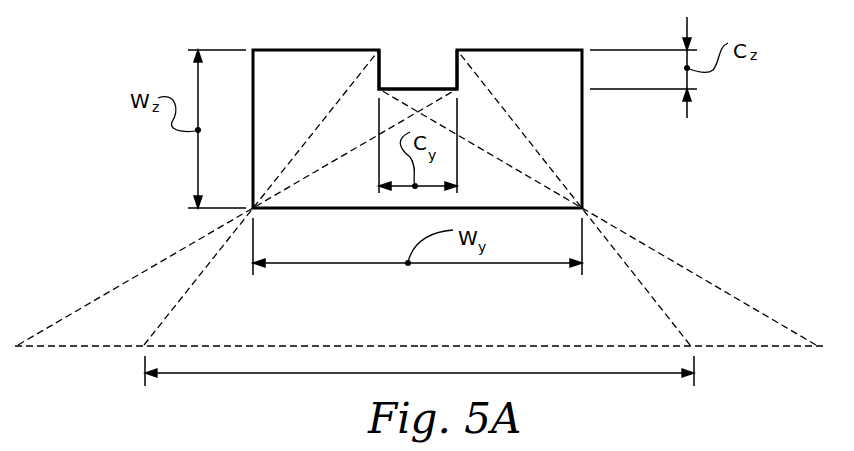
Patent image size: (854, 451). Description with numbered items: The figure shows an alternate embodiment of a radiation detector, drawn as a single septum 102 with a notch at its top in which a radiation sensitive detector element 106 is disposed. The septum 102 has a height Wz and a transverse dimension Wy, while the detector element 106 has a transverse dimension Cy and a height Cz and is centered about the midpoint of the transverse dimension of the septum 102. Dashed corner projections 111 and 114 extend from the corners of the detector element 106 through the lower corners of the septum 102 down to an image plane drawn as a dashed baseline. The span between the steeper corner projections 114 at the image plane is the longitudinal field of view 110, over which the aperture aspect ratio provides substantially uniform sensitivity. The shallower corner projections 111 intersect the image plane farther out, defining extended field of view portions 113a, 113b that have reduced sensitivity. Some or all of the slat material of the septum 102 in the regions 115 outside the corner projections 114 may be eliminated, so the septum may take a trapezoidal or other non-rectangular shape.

The septum 102 is at (343, 50).
The detector element 106 is at (420, 50).
The longitudinal field of view 110 is at (258, 373).
The corner projections 111 is at (168, 260).
The extended field of view portion 113a is at (93, 357).
The extended field of view portion 113b is at (740, 354).
The corner projections 114 is at (170, 312).
The regions outside the corner projections 115 is at (300, 83).